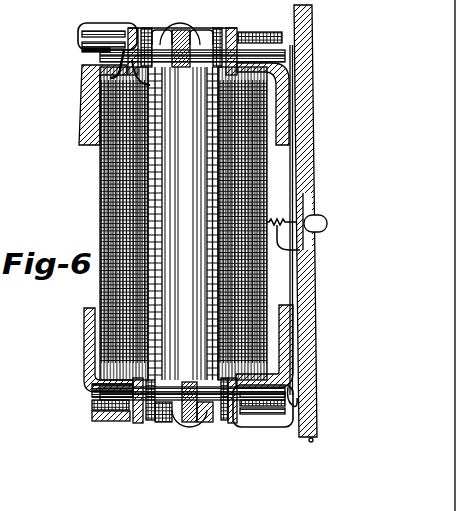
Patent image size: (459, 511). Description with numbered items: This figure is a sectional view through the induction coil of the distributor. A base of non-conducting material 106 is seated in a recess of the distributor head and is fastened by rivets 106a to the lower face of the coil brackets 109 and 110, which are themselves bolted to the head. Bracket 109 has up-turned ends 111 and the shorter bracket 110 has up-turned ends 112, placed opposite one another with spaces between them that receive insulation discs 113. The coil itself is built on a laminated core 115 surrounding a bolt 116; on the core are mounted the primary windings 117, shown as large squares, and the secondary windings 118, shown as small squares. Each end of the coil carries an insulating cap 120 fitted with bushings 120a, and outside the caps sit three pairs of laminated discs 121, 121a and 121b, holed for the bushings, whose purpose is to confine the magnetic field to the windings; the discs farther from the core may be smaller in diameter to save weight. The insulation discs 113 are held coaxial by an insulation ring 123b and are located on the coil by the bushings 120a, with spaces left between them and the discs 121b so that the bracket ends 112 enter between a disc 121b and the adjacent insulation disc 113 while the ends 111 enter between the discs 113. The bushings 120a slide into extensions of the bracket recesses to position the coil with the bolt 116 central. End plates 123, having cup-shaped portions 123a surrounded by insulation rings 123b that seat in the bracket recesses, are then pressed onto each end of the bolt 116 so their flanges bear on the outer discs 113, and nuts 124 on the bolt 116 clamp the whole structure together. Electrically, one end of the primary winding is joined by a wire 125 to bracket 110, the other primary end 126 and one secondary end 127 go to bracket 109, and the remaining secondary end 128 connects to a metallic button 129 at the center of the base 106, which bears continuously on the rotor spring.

The base of non-conducting material 106 is at (301, 118).
The rivets 106a is at (14, 153).
The coil bracket 109 is at (297, 398).
The coil bracket 110 is at (293, 387).
The up-turned ends 111 is at (123, 40).
The up-turned ends 112 is at (110, 77).
The insulation discs 113 is at (125, 417).
The laminated core 115 is at (172, 205).
The bolt 116 is at (191, 420).
The primary windings 117 is at (157, 162).
The secondary windings 118 is at (123, 230).
The insulating caps 120 is at (83, 107).
The bushings 120a is at (137, 427).
The laminated discs 121 is at (90, 388).
The laminated discs 121a is at (100, 395).
The laminated discs 121b is at (110, 400).
The end plates 123 is at (217, 418).
The cup-shaped portions 123a is at (213, 423).
The insulation rings 123b is at (160, 427).
The nuts 124 is at (177, 423).
The wire 125 is at (133, 30).
The other end of the primary winding 126 is at (256, 433).
The end of the secondary winding 127 is at (276, 427).
The other end of the secondary winding 128 is at (300, 250).
The metallic button 129 is at (314, 222).